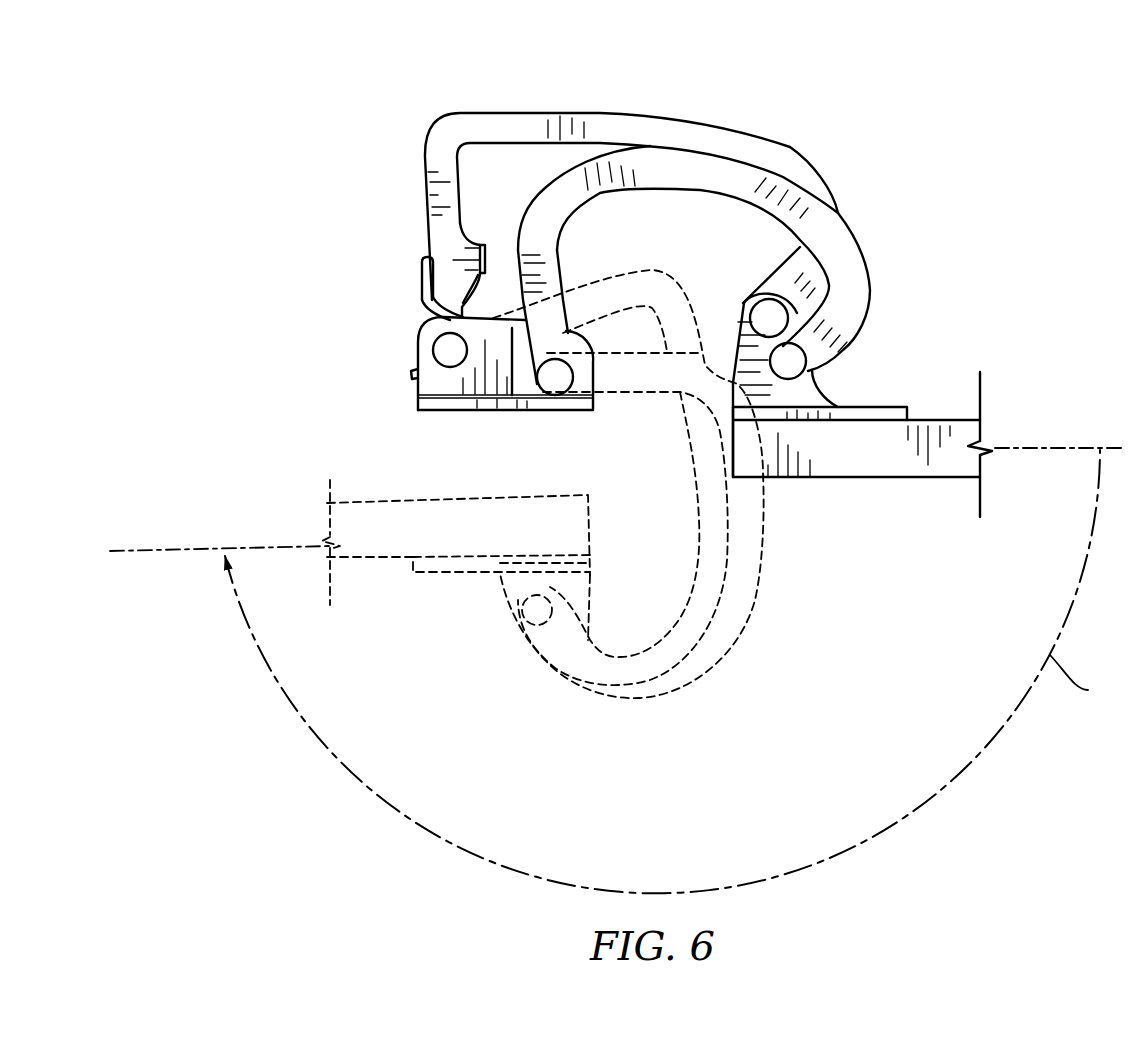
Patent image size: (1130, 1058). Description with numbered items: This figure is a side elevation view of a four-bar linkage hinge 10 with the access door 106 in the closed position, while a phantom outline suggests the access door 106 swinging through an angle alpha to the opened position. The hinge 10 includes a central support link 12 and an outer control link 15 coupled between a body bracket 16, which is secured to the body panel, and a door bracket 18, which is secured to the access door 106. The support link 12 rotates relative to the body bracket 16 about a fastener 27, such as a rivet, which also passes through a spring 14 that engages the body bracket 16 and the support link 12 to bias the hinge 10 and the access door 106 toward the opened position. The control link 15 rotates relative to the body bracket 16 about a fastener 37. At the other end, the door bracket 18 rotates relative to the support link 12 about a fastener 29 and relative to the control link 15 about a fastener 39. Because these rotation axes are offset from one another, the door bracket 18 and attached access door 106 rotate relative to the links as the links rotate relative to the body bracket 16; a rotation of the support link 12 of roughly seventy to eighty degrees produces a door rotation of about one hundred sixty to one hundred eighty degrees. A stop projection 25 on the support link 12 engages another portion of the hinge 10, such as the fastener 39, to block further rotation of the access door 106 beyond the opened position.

The four-bar linkage hinge 10 is at (905, 170).
The central support link 12 is at (467, 108).
The spring 14 is at (410, 263).
The outer control link 15 is at (581, 176).
The body bracket 16 is at (412, 348).
The door bracket 18 is at (840, 407).
The stop projection 25 is at (471, 240).
The fastener 27 is at (450, 372).
The fastener 29 is at (765, 300).
The fastener 37 is at (554, 384).
The fastener 39 is at (810, 364).
The access door 106 is at (936, 416).